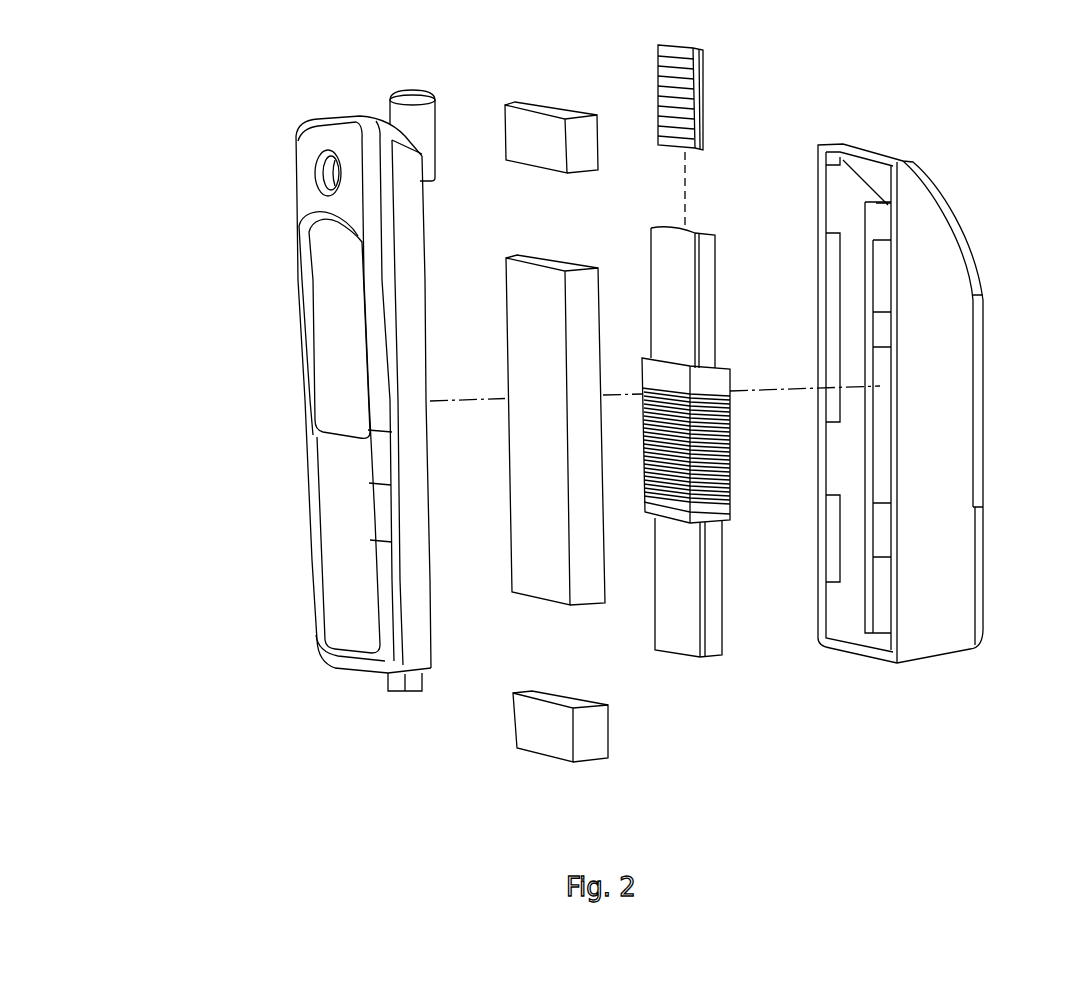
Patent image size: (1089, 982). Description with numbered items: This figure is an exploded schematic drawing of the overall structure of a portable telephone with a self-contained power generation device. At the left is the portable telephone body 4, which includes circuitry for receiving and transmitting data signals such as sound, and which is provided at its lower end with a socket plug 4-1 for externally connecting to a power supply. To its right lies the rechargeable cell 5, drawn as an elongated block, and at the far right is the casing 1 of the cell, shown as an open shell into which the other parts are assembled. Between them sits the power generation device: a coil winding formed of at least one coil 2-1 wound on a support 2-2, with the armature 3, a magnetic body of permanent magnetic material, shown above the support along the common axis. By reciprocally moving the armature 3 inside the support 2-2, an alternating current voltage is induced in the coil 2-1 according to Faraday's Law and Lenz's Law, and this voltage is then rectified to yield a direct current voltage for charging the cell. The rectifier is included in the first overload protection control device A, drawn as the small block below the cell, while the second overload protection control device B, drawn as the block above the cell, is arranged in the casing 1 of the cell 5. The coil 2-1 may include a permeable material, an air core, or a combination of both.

The casing 1 is at (958, 197).
The coil 2-1 is at (731, 463).
The support 2-2 is at (723, 657).
The armature 3 is at (706, 52).
The portable telephone body 4 is at (365, 381).
The socket plug 4-1 is at (394, 691).
The rechargeable cell 5 is at (573, 609).
The first overload protection control device A is at (513, 748).
The second overload protection control device B is at (505, 107).